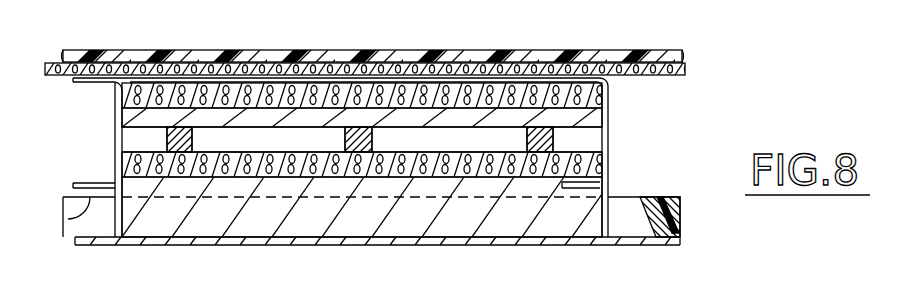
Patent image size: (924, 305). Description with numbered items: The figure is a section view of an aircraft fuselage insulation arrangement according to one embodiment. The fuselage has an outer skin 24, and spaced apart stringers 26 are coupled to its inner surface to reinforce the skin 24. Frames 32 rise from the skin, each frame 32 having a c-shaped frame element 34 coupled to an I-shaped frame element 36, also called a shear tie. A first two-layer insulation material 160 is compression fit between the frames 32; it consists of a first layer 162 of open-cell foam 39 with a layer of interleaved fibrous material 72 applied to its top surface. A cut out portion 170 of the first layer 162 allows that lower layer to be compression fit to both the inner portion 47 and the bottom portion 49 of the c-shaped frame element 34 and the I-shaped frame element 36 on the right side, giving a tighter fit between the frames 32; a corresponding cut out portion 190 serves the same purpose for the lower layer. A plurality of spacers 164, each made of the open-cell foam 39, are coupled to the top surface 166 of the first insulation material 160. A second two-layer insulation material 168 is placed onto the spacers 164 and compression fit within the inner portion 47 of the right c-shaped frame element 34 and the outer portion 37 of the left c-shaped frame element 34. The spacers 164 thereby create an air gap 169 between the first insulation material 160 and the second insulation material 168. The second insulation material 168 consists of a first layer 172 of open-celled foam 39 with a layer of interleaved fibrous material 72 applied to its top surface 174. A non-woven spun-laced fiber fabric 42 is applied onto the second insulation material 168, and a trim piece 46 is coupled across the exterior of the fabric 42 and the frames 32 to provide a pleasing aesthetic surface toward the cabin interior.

The trim piece 46 is at (160, 57).
The non-woven spun-laced fiber fabric 42 is at (217, 68).
The c-shaped frame element 34 is at (114, 96).
The frame 32 is at (78, 136).
The outer portion 37 is at (122, 130).
The top surface 174 is at (403, 108).
The first layer 172 is at (320, 122).
The spacers 164 is at (366, 143).
The air gap 169 is at (447, 142).
The top surface 166 is at (478, 150).
The open-cell foam 39 is at (222, 227).
The interleaved fibrous material 72 is at (275, 97).
The I-shaped frame element 36 is at (124, 207).
The first layer 162 is at (218, 228).
The outer skin 24 is at (100, 245).
The stringers 26 is at (72, 211).
The cut out portion 190 is at (112, 190).
The bottom portion 49 is at (78, 225).
The inner portion 47 is at (597, 177).
The second two-layer insulation material 168 is at (620, 82).
The first two-layer insulation material 160 is at (686, 160).
The cut out portion 170 is at (594, 193).